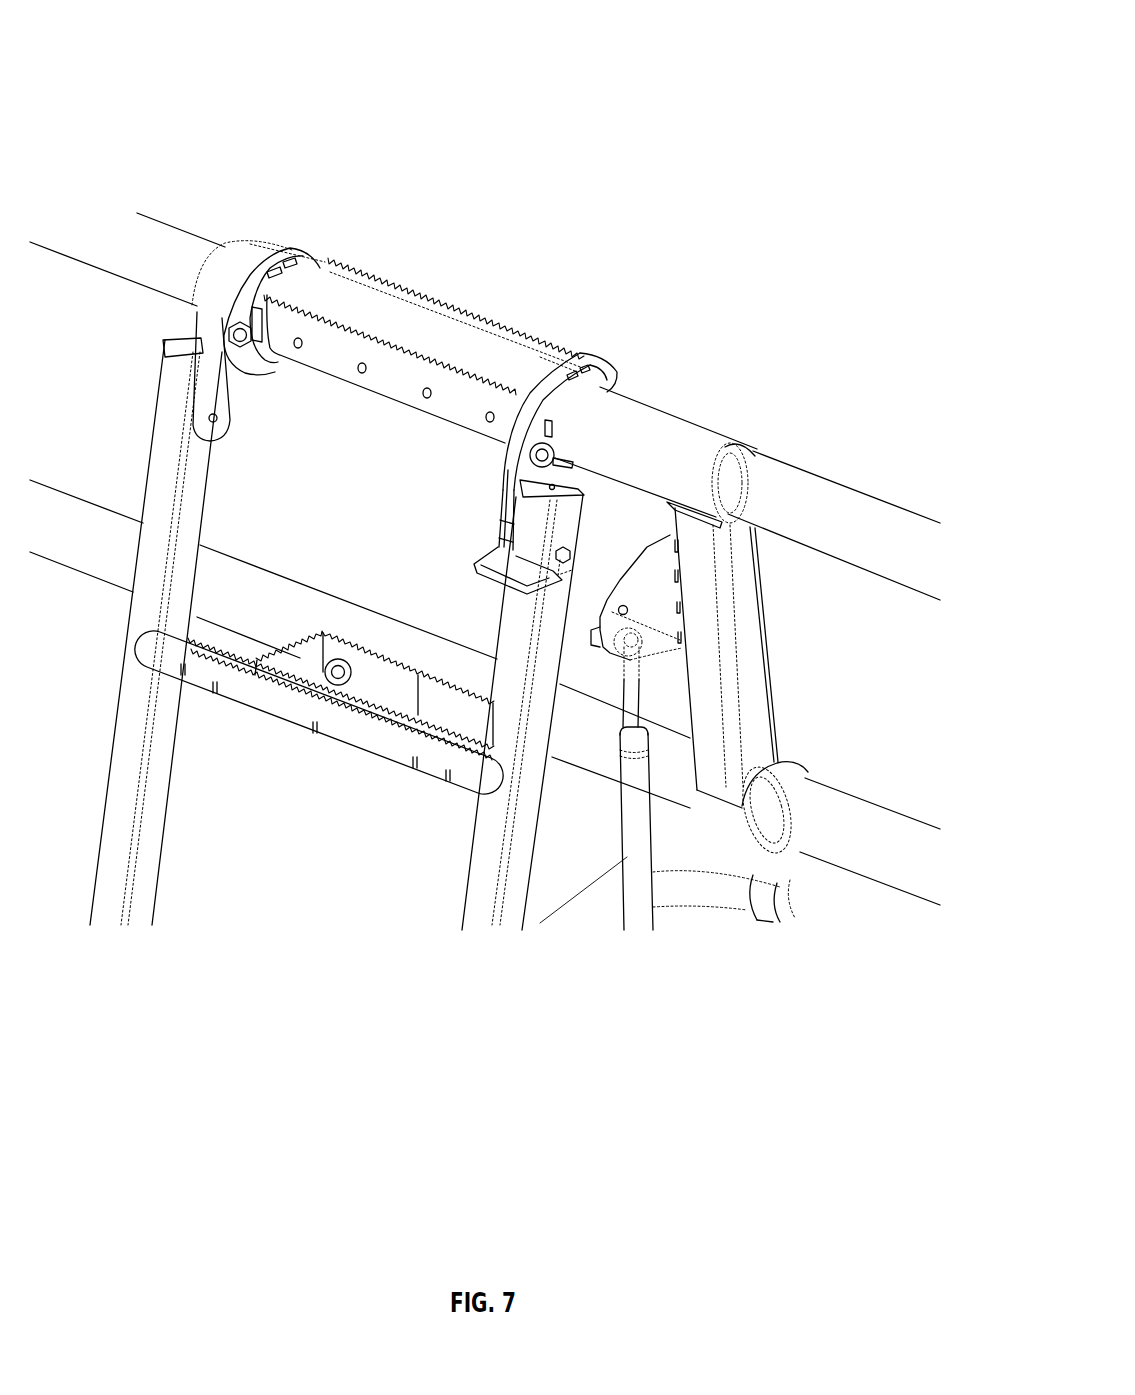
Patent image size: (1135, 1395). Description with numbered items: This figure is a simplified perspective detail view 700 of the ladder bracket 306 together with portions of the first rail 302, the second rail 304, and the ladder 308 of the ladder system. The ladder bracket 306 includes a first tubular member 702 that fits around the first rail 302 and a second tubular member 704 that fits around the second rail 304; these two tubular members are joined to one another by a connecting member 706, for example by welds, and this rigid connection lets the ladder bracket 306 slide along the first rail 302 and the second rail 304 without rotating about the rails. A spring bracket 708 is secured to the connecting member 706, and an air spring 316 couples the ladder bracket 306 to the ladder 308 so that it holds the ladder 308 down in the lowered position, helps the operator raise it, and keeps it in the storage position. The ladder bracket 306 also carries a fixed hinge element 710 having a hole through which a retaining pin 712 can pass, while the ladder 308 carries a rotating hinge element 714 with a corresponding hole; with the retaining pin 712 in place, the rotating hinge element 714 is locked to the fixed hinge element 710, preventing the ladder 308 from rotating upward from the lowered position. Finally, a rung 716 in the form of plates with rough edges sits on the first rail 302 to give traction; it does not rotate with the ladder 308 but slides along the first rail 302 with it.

The rack assembly 700 is at (862, 104).
The first rail 302 is at (157, 215).
The second rail 304 is at (108, 500).
The ladder bracket 306 is at (757, 540).
The ladder 308 is at (152, 900).
The air spring 316 is at (623, 855).
The first tubular member 702 is at (683, 420).
The second tubular member 704 is at (790, 770).
The connecting member 706 is at (773, 707).
The spring bracket 708 is at (658, 607).
The fixed hinge element 710 is at (497, 490).
The retaining pin 712 is at (473, 567).
The rotating hinge element 714 is at (503, 527).
The rung 716 is at (503, 323).